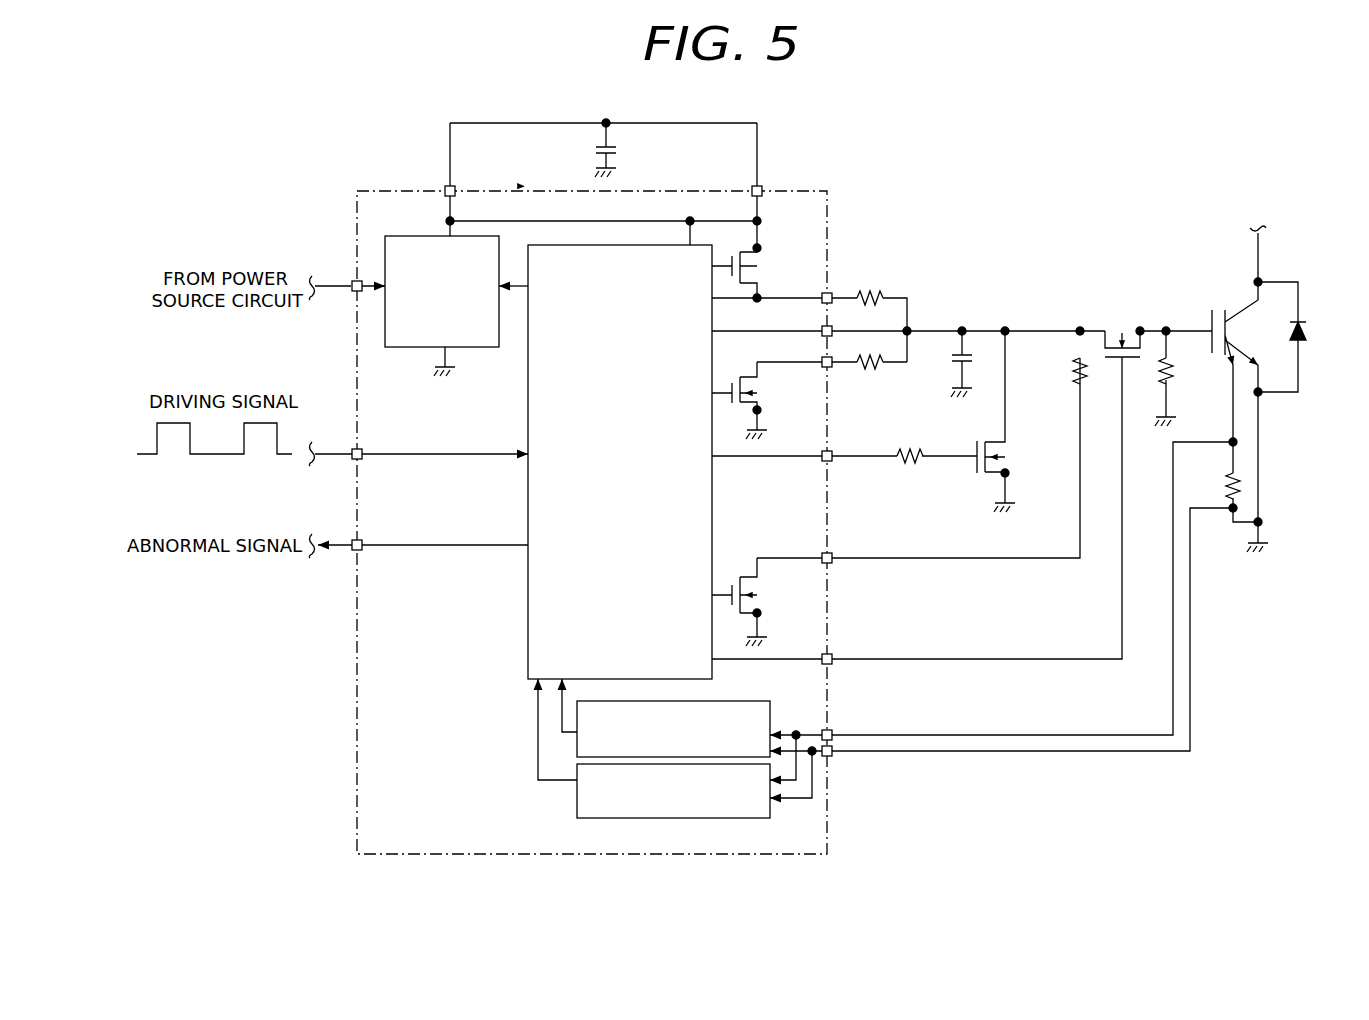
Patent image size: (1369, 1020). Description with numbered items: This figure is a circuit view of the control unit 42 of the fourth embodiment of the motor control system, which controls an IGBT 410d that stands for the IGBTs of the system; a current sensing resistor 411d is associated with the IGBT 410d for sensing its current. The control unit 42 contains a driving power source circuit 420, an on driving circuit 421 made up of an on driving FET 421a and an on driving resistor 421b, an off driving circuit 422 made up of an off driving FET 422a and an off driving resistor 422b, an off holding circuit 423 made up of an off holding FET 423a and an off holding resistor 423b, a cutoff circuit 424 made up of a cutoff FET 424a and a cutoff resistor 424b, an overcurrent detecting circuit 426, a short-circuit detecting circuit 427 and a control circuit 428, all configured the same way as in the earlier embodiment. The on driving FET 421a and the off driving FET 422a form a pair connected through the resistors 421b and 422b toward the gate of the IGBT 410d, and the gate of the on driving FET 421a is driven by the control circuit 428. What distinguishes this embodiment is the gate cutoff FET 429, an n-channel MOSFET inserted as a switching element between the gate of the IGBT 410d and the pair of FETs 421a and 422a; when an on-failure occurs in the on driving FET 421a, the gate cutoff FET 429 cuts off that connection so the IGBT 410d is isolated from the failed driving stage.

The control unit 42 is at (866, 150).
The driving power source circuit 420 is at (402, 350).
The on driving circuit 421 is at (713, 272).
The on driving FET 421a is at (763, 270).
The on driving resistor 421b is at (868, 290).
The off driving circuit 422 is at (814, 399).
The off driving FET 422a is at (790, 390).
The off driving resistor 422b is at (867, 374).
The off holding circuit 423 is at (863, 439).
The off holding FET 423a is at (966, 472).
The off holding resistor 423b is at (906, 466).
The cutoff circuit 424 is at (899, 502).
The cutoff FET 424a is at (790, 592).
The cutoff resistor 424b is at (922, 460).
The overcurrent detecting circuit 426 is at (748, 700).
The short-circuit detecting circuit 427 is at (576, 800).
The control circuit 428 is at (528, 432).
The gate cutoff FET 429 is at (1116, 326).
The IGBT 410d is at (1213, 302).
The current sensing resistor 411d is at (1226, 487).